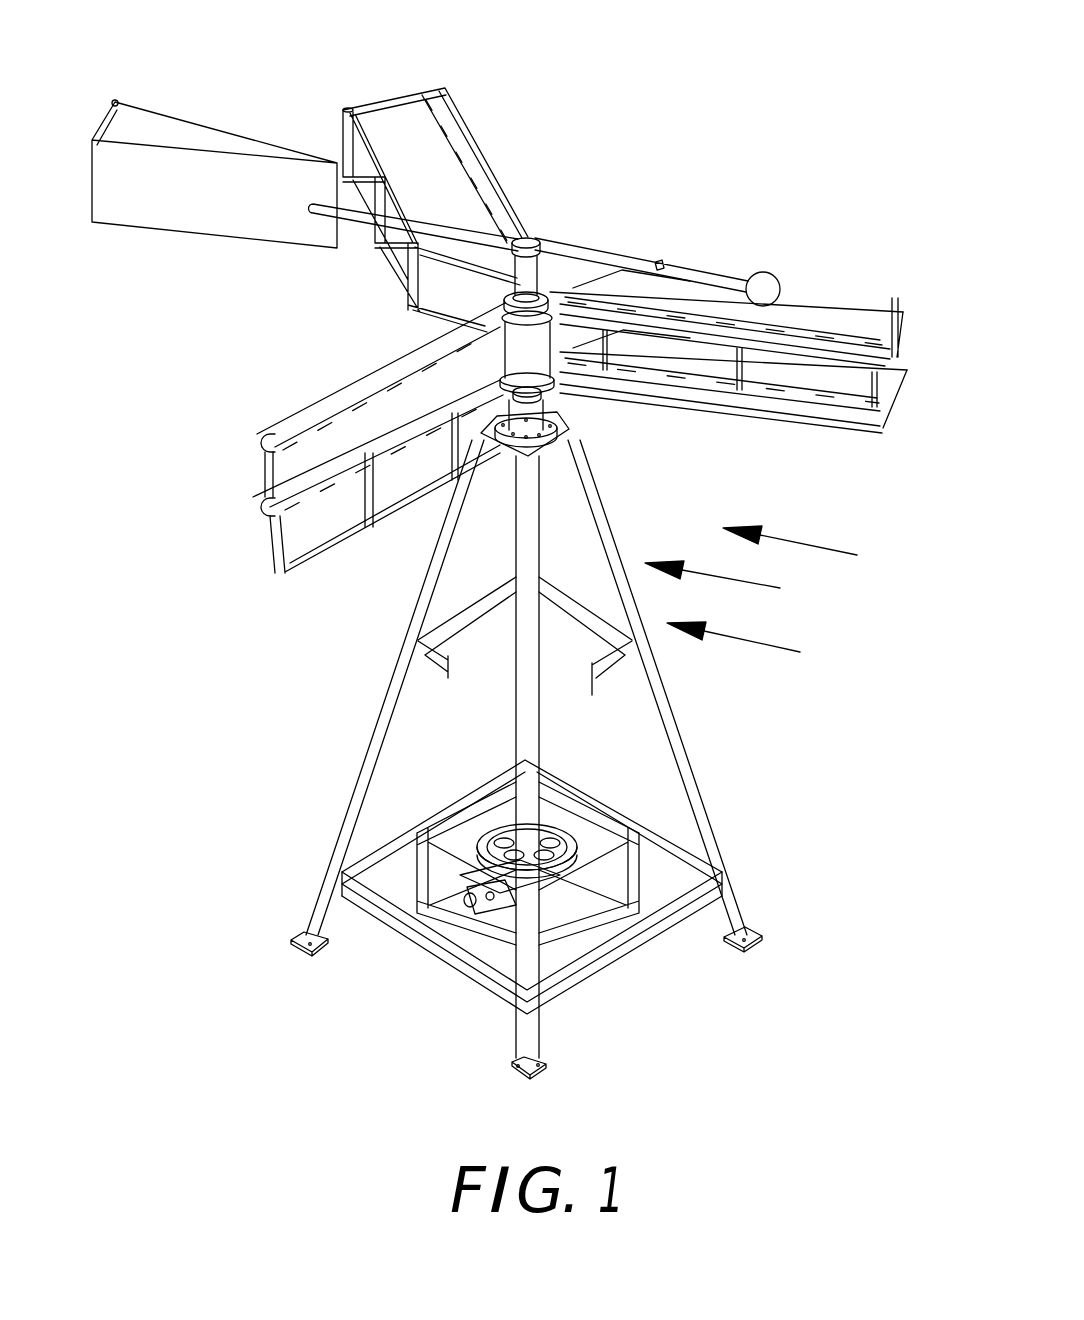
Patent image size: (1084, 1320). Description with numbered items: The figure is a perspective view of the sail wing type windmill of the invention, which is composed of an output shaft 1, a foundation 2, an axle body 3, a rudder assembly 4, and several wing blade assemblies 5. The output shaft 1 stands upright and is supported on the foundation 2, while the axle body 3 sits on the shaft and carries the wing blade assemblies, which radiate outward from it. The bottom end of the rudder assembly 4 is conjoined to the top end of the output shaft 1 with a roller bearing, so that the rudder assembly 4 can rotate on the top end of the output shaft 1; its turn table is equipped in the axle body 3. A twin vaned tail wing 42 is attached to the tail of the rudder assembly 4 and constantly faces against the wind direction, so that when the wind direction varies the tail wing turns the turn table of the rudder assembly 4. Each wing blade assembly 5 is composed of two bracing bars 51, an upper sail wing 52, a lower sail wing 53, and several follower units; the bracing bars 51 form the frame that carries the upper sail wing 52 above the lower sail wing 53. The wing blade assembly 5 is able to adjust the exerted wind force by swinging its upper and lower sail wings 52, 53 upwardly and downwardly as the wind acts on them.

The output shaft 1 is at (527, 725).
The foundation 2 is at (528, 410).
The axle body 3 is at (537, 353).
The rudder assembly 4 is at (553, 236).
The twin vaned tail wing 42 is at (227, 197).
The wing blade assembly 5 is at (369, 88).
The bracing bar 51 is at (462, 153).
The upper sail wing 52 is at (400, 110).
The lower sail wing 53 is at (810, 380).